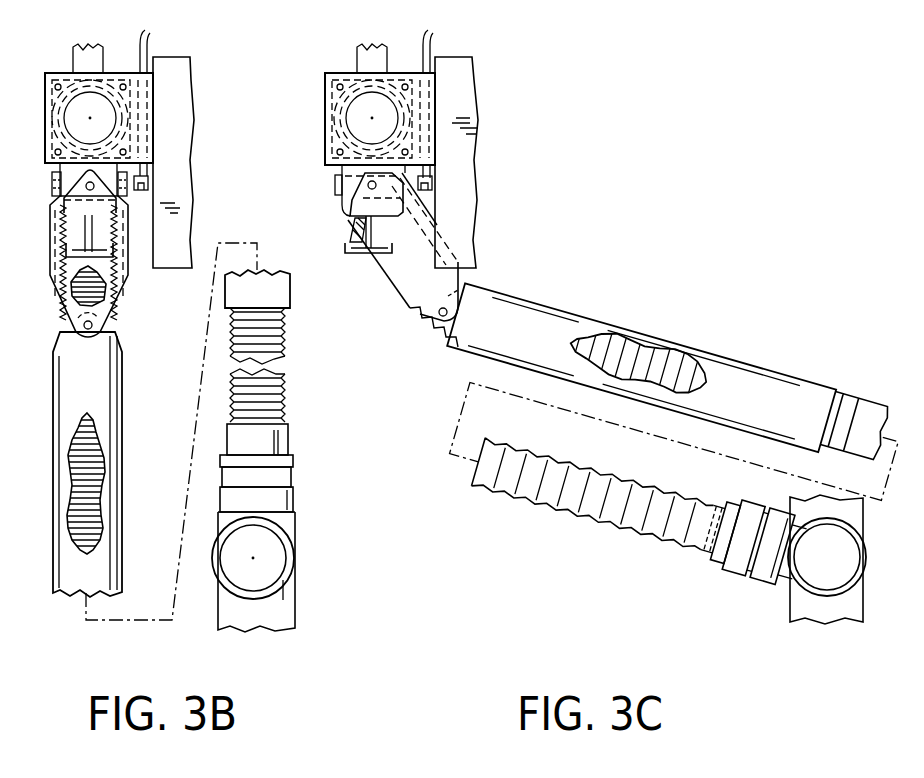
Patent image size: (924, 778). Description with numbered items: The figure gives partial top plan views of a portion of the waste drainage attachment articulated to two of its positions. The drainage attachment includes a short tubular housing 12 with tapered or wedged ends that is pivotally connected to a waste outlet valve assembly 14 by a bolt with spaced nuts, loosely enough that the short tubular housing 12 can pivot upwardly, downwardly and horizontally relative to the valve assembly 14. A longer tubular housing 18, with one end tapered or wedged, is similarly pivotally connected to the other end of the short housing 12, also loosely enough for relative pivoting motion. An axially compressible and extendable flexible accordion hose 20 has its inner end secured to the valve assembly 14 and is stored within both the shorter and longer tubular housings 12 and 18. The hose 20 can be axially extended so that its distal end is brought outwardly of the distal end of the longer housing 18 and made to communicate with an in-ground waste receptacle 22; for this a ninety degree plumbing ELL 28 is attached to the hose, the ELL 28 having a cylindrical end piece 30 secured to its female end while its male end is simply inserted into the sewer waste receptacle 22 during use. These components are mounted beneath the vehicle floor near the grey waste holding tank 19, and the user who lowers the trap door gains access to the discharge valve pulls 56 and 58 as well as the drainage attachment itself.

In FIG. 3B, the waste outlet valve assembly 14 is at (62, 73).
In FIG. 3C, the waste outlet valve assembly 14 is at (345, 73).
In FIG. 3B, the grey waste holding tank 19 is at (175, 97).
In FIG. 3C, the grey waste holding tank 19 is at (465, 82).
In FIG. 3B, the discharge valve pull 58 is at (148, 185).
In FIG. 3C, the discharge valve pull 58 is at (432, 183).
In FIG. 3B, the short tubular housing 12 is at (48, 218).
In FIG. 3C, the short tubular housing 12 is at (392, 287).
In FIG. 3B, the discharge valve pull 56 is at (64, 250).
In FIG. 3C, the discharge valve pull 56 is at (345, 248).
In FIG. 3B, the longer tubular housing 18 is at (54, 398).
In FIG. 3C, the longer tubular housing 18 is at (521, 296).
In FIG. 3B, the flexible accordion hose 20 is at (68, 515).
In FIG. 3C, the flexible accordion hose 20 is at (563, 517).
In FIG. 3B, the cylindrical end piece 30 is at (292, 478).
In FIG. 3C, the cylindrical end piece 30 is at (740, 560).
In FIG. 3B, the 90 degree plumbing ELL 28 is at (294, 504).
In FIG. 3C, the 90 degree plumbing ELL 28 is at (783, 570).
In FIG. 3B, the in-ground waste receptacle 22 is at (296, 558).
In FIG. 3C, the in-ground waste receptacle 22 is at (815, 600).